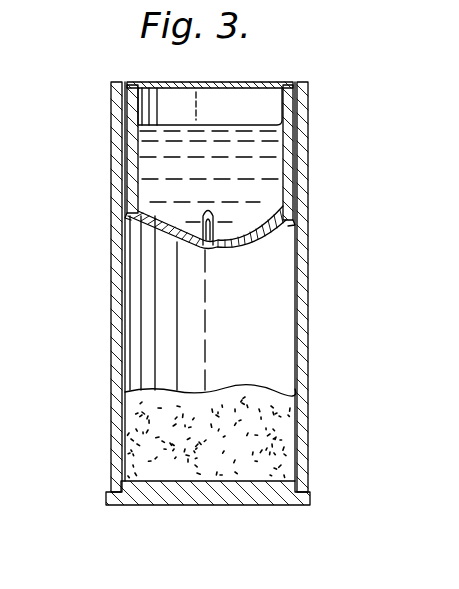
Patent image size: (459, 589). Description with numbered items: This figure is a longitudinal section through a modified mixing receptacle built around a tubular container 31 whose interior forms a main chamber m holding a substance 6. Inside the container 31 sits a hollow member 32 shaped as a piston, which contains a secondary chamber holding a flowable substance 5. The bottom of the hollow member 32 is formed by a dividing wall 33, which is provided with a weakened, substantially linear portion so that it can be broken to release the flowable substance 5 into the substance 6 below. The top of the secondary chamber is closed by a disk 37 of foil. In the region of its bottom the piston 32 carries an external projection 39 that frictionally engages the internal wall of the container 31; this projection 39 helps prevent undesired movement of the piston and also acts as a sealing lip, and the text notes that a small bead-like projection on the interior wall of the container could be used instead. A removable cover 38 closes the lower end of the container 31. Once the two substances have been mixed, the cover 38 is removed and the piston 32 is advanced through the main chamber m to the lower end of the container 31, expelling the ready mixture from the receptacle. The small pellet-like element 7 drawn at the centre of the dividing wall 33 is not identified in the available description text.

The cartridge casing 31 is at (113, 402).
The outer wall 32 is at (124, 164).
The frangible diaphragm 33 is at (258, 226).
The top closure disc 37 is at (169, 82).
The base 38 is at (203, 497).
The inner liner wall 39 is at (122, 208).
The liquid-filled cup 5 is at (243, 103).
The powder charge 6 is at (252, 422).
The igniter pellet 7 is at (198, 229).
The expansion chamber m is at (270, 318).